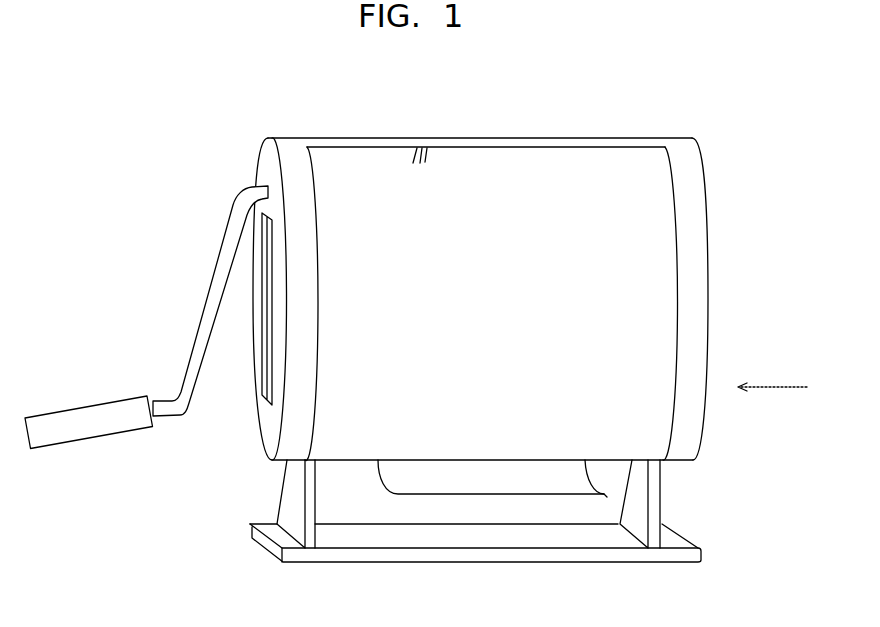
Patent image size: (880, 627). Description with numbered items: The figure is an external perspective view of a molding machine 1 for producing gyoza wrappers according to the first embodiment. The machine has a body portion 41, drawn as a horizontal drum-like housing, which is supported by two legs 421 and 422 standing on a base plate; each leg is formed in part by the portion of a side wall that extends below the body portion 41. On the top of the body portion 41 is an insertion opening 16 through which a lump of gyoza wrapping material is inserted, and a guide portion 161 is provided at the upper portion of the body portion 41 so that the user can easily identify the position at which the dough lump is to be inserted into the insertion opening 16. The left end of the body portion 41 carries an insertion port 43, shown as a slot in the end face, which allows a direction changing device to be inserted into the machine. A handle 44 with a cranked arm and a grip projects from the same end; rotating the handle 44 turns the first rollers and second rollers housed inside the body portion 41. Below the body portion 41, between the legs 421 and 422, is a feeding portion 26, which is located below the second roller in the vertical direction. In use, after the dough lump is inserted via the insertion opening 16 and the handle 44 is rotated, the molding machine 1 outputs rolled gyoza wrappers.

The molding machine 1 is at (725, 102).
The insertion opening 16 is at (326, 146).
The guide portion 161 is at (422, 148).
The feeding portion 26 is at (380, 462).
The body portion 41 is at (657, 298).
The leg 421 is at (657, 502).
The leg 422 is at (270, 508).
The insertion port 43 is at (263, 400).
The handle 44 is at (40, 448).